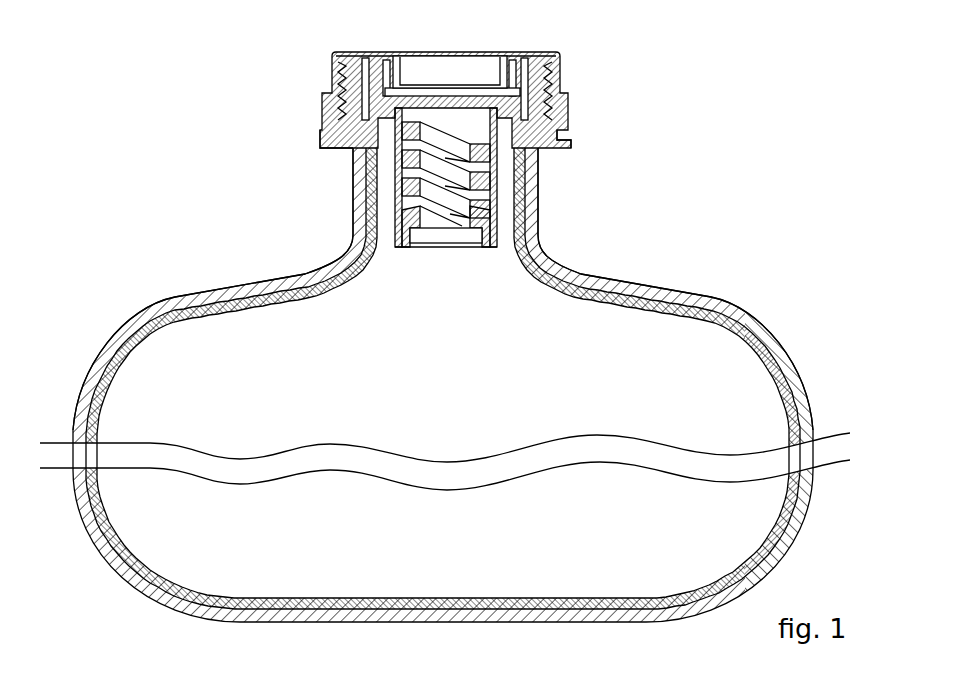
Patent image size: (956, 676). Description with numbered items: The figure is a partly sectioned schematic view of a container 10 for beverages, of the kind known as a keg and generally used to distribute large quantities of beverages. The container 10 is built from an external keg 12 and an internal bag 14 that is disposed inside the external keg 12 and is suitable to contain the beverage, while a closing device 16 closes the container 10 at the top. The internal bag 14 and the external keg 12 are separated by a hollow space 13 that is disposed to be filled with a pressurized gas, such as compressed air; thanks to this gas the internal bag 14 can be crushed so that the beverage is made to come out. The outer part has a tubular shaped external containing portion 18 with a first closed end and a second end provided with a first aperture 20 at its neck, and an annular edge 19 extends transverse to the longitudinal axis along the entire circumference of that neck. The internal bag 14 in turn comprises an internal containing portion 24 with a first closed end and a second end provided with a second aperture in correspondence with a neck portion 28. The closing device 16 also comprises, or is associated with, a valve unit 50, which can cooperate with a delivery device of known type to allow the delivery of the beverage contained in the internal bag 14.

The container 10 is at (445, 316).
The external keg 12 is at (90, 390).
The hollow space 13 is at (114, 355).
The internal bag 14 is at (98, 432).
The closing device 16 is at (477, 94).
The external containing portion 18 is at (692, 288).
The annular edge 19 is at (556, 140).
The first aperture 20 is at (510, 52).
The internal containing portion 24 is at (200, 300).
The neck portion 28 is at (360, 152).
The valve unit 50 is at (462, 257).